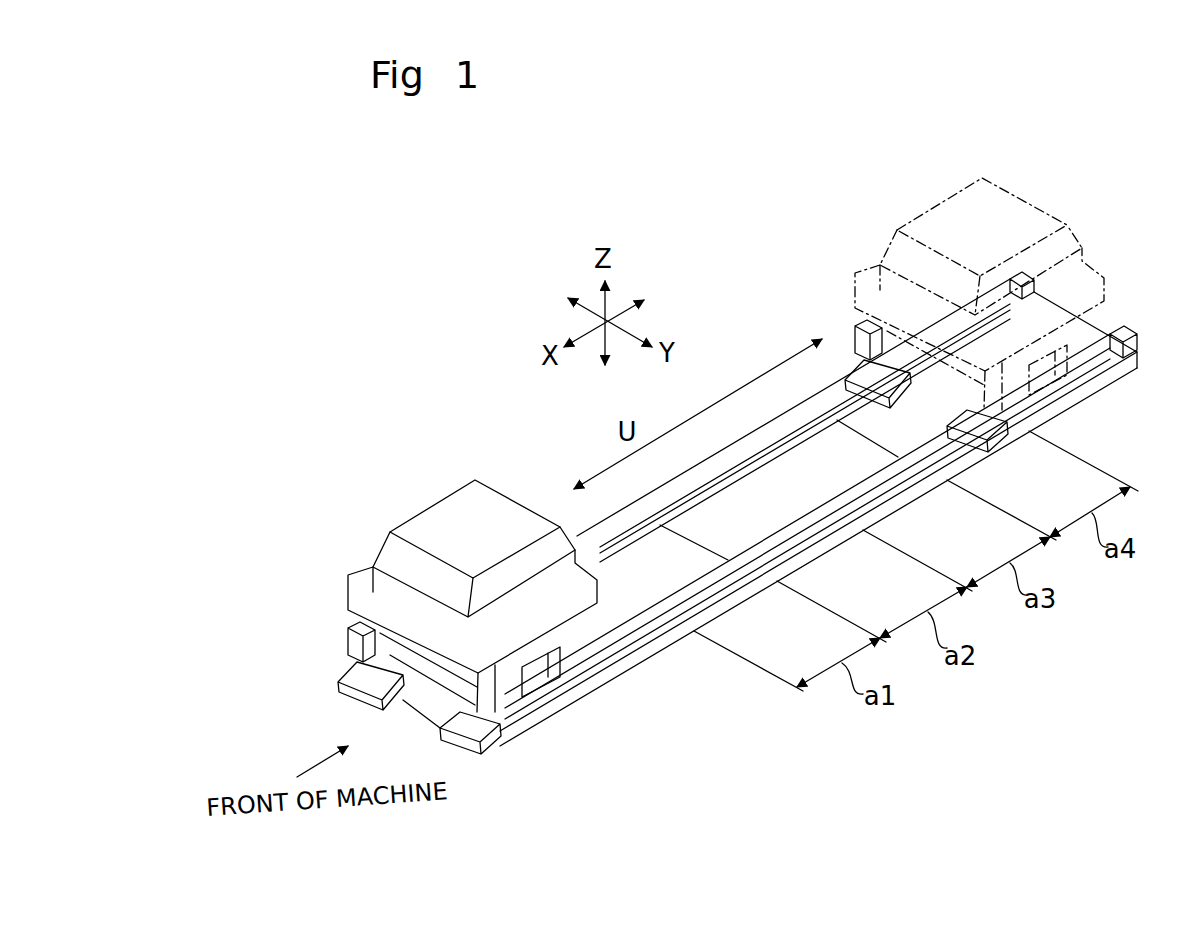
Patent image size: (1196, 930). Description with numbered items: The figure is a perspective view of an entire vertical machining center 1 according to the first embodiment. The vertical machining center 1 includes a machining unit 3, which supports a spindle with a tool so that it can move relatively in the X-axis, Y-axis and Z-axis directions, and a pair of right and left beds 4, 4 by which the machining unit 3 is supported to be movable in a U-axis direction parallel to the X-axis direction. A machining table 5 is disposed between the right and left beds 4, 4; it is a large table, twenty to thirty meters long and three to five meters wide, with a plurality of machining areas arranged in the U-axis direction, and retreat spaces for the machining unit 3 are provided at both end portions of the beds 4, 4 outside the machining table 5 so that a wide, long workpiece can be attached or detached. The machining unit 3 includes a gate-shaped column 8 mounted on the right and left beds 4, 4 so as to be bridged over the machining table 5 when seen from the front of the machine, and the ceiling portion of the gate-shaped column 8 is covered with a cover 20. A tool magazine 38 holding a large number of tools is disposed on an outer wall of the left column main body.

The vertical machining center 1 is at (421, 386).
The machining unit 3 is at (411, 506).
The bed 4 is at (586, 524).
The machining table 5 is at (666, 578).
The gate-shaped column 8 is at (468, 703).
The cover 20 is at (456, 485).
The tool magazine 38 is at (348, 630).